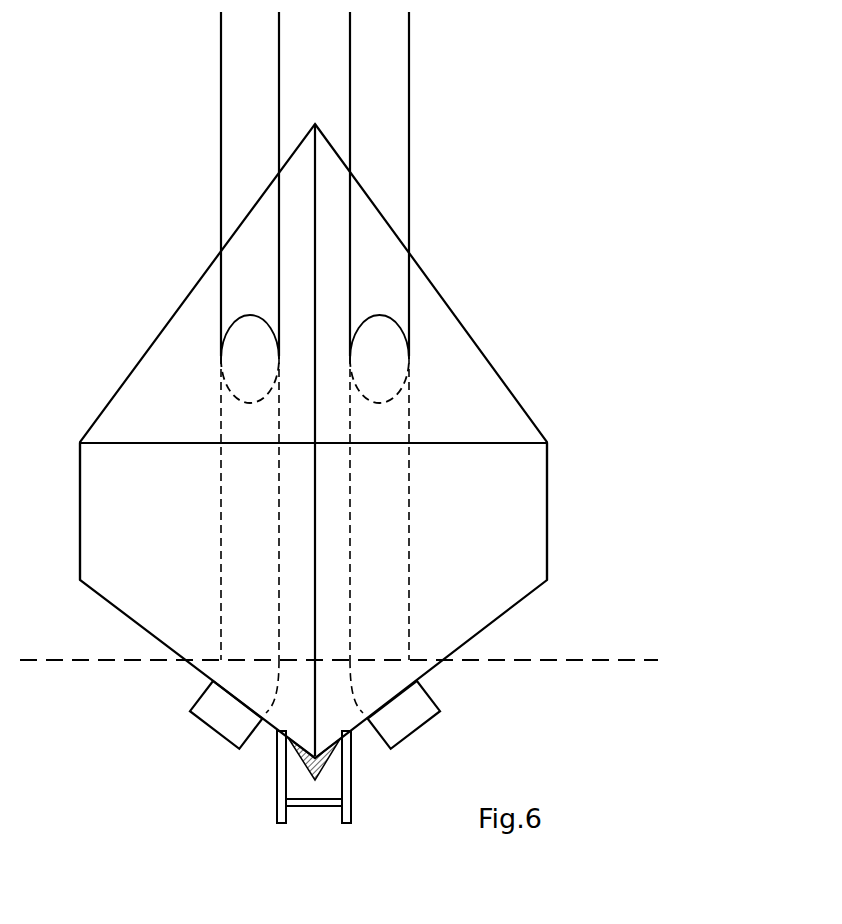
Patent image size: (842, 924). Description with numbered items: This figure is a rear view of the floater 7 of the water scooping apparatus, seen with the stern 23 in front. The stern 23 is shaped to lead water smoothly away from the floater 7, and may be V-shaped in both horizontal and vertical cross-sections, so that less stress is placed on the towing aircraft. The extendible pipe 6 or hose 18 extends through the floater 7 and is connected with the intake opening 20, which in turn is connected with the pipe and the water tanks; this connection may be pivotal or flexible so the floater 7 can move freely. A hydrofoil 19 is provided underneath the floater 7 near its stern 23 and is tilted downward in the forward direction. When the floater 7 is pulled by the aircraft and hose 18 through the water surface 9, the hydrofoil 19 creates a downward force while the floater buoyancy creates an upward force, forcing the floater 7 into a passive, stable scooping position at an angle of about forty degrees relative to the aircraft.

The extendible pipe 6 is at (367, 362).
The hose 18 is at (388, 90).
The floater 7 is at (465, 330).
The stern 23 is at (478, 500).
The water surface 9 is at (540, 660).
The intake opening 20 is at (417, 703).
The hydrofoil 19 is at (302, 807).